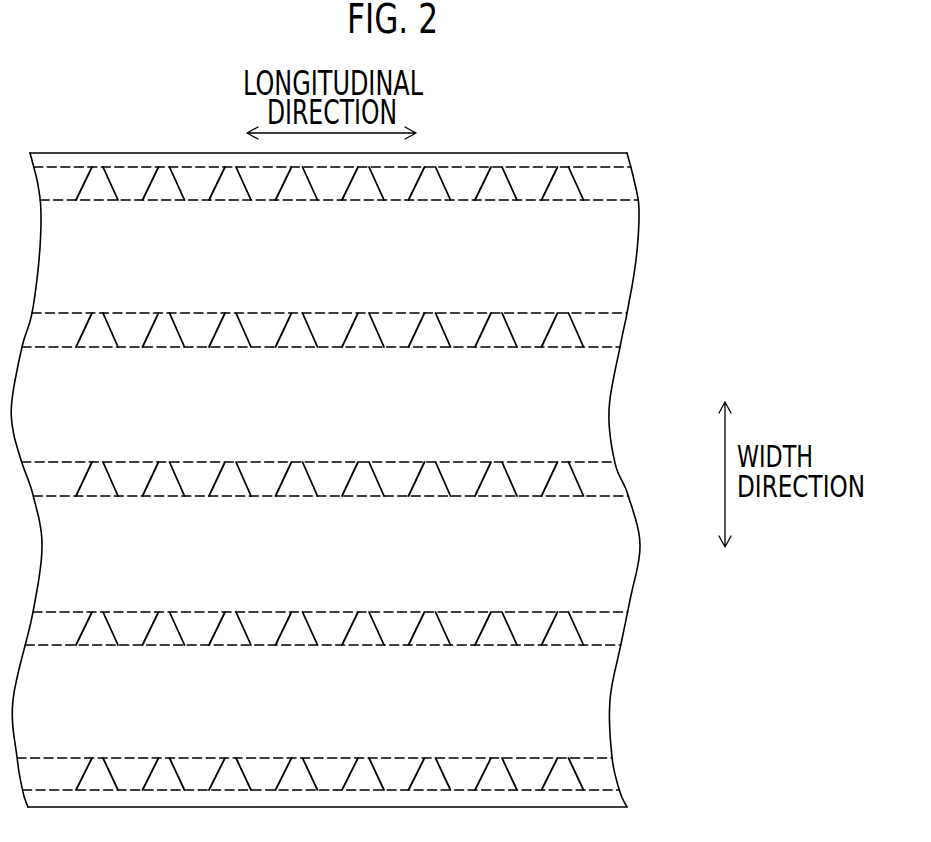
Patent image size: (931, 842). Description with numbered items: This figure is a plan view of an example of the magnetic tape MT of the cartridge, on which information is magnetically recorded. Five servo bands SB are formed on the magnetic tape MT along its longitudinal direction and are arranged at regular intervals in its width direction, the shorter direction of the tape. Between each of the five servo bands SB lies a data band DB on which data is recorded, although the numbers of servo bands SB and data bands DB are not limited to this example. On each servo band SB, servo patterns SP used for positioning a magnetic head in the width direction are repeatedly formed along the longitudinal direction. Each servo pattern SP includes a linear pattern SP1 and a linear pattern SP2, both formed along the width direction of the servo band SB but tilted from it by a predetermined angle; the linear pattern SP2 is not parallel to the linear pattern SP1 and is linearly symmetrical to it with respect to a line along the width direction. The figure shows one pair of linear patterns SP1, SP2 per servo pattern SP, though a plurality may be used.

The magnetic tape MT is at (560, 152).
The servo band SB is at (359, 487).
The data band DB is at (626, 259).
The servo pattern SP is at (323, 478).
The linear pattern SP1 is at (86, 191).
The linear pattern SP2 is at (118, 191).